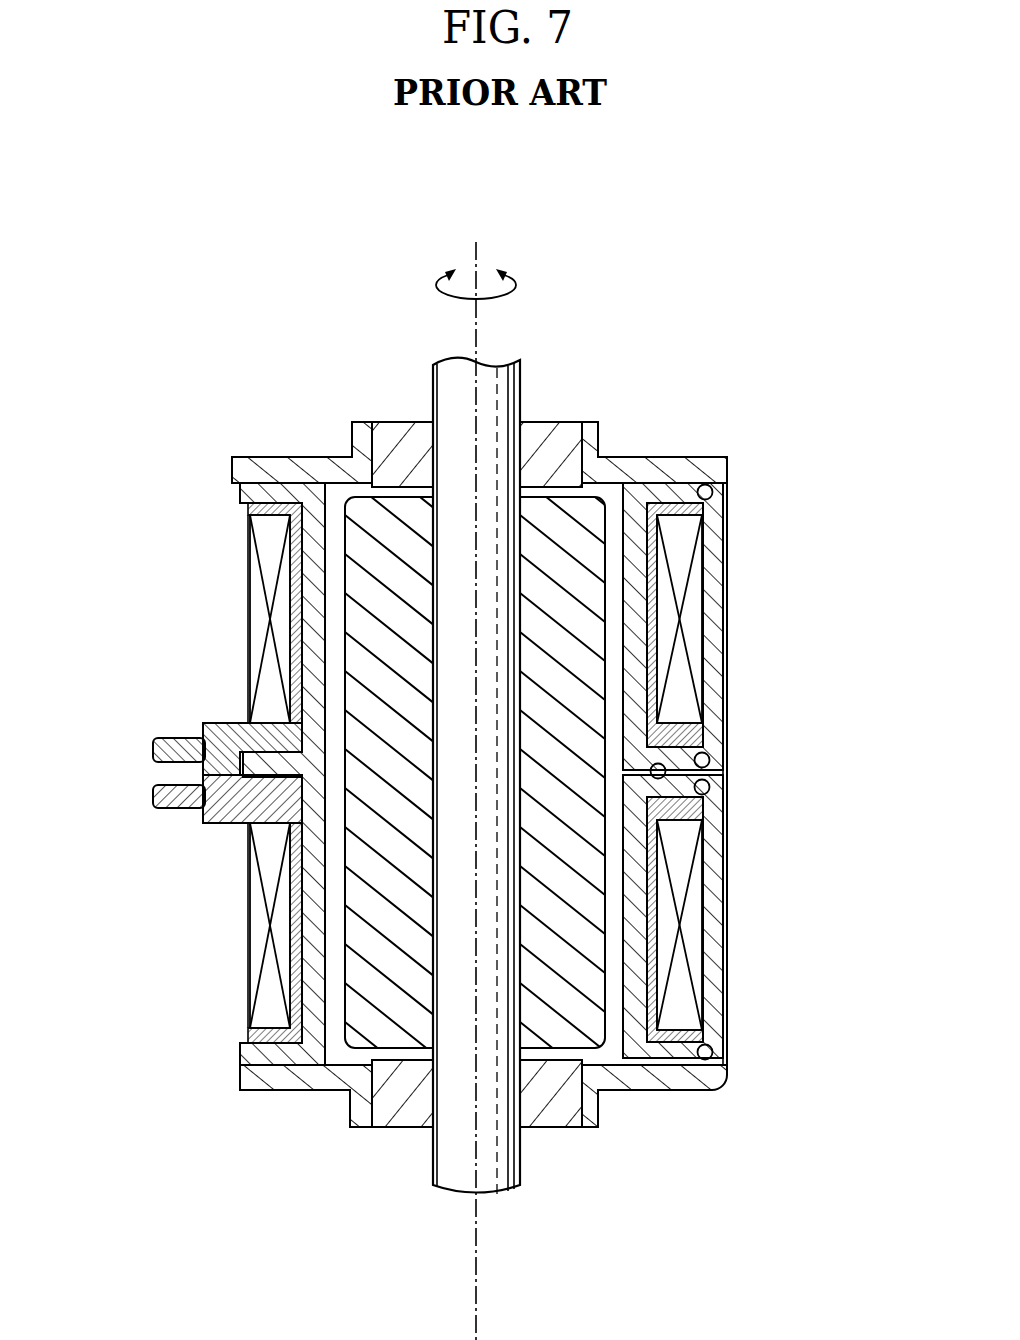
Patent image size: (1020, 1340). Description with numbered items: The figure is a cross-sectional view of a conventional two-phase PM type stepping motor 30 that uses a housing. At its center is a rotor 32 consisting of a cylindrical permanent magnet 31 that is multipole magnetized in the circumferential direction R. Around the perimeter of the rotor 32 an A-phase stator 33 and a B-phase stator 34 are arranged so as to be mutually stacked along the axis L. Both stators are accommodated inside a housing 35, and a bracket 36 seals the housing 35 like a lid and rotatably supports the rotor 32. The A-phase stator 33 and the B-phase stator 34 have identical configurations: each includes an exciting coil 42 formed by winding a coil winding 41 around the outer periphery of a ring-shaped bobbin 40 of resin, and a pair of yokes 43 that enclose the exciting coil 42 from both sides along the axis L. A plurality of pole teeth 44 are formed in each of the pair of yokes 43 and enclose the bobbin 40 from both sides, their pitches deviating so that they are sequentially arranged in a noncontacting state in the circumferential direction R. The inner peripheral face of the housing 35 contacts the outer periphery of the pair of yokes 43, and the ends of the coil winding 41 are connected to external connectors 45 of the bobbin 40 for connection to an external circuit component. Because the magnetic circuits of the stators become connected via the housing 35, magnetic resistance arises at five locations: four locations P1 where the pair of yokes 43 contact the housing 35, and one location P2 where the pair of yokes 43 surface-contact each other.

The two-phase PM type stepping motor 30 is at (752, 340).
The cylindrical permanent magnet 31 is at (590, 522).
The rotor 32 is at (432, 385).
The A-phase stator 33 is at (805, 568).
The B-phase stator 34 is at (805, 928).
The housing 35 is at (663, 1082).
The bracket 36 is at (688, 464).
The bobbin 40 is at (203, 722).
The coil winding 41 is at (255, 618).
The exciting coil 42 is at (695, 640).
The pair of yokes 43 is at (705, 592).
The pole teeth 44 is at (663, 556).
The external connectors 45 is at (150, 748).
The locations where the yokes contact the housing P1 is at (714, 490).
The location where the yokes surface-contact each other P2 is at (705, 803).
The axis L is at (478, 258).
The circumferential direction R is at (517, 283).